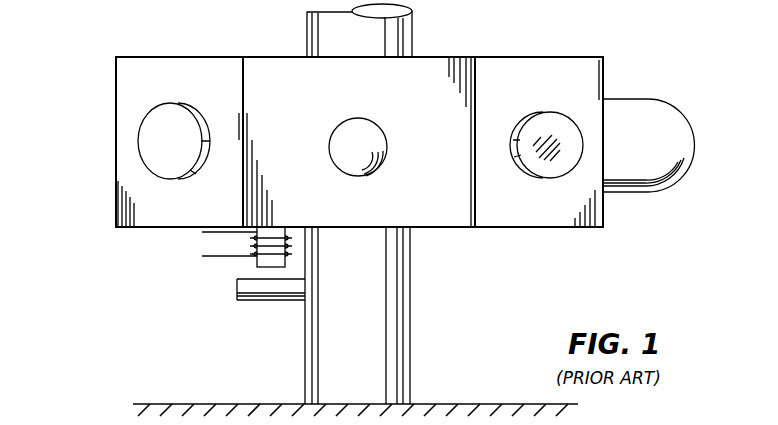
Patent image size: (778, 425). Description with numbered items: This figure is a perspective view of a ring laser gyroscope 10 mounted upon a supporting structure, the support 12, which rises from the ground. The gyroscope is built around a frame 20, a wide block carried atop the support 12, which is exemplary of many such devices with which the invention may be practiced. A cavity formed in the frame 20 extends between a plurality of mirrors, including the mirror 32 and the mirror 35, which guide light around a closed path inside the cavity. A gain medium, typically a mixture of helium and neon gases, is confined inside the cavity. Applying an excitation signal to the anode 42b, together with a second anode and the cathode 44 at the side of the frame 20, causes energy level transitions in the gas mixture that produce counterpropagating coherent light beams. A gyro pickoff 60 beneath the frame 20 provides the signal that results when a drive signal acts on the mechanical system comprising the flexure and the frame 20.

The ring laser gyroscope 10 is at (120, 249).
The support 12 is at (305, 381).
The frame 20 is at (452, 229).
The mirror 32 is at (201, 120).
The mirror 35 is at (548, 120).
The anode 42b is at (356, 118).
The cathode 44 is at (653, 194).
The gyro pickoff 60 is at (203, 266).